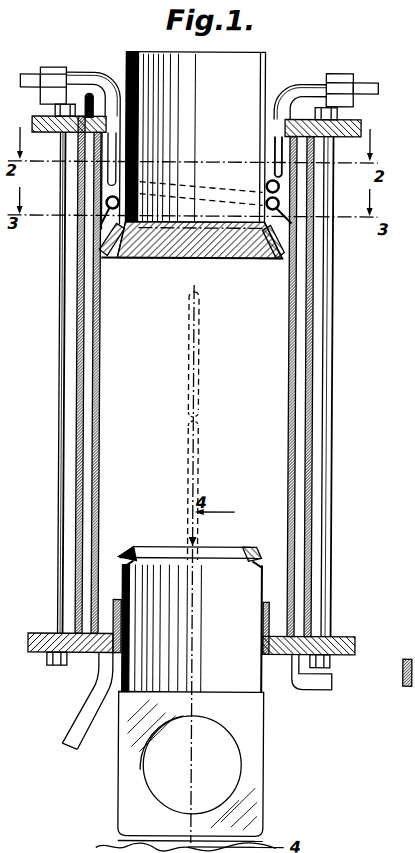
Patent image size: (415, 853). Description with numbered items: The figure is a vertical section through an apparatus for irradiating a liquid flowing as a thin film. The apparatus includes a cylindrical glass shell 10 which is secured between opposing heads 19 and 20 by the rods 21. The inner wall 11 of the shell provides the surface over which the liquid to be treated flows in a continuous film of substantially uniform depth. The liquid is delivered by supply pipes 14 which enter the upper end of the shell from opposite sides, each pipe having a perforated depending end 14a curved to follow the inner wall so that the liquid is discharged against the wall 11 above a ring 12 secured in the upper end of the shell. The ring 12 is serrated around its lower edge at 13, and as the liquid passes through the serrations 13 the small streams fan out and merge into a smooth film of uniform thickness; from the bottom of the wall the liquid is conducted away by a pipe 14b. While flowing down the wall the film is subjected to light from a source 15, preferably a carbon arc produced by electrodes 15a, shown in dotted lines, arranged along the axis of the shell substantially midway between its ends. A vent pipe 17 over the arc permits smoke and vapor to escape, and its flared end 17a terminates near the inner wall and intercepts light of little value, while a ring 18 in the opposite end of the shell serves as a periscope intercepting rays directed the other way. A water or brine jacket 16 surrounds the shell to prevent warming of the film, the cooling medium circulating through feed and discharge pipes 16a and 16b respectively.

The cylindrical glass shell 10 is at (192, 376).
The inner wall 11 is at (102, 303).
The ring 12 is at (268, 244).
The serrations 13 is at (104, 258).
The supply pipes 14 is at (78, 74).
The depending end 14a is at (110, 172).
The pipe 14b is at (90, 704).
The light source 15 is at (208, 419).
The electrodes 15a is at (188, 416).
The water or brine jacket 16 is at (80, 408).
The feed pipe 16a is at (90, 96).
The discharge pipe 16b is at (315, 690).
The vent pipe 17 is at (260, 80).
The flared end 17a is at (258, 262).
The ring 18 is at (140, 545).
The head 19 is at (352, 128).
The head 20 is at (336, 636).
The rods 21 is at (63, 345).